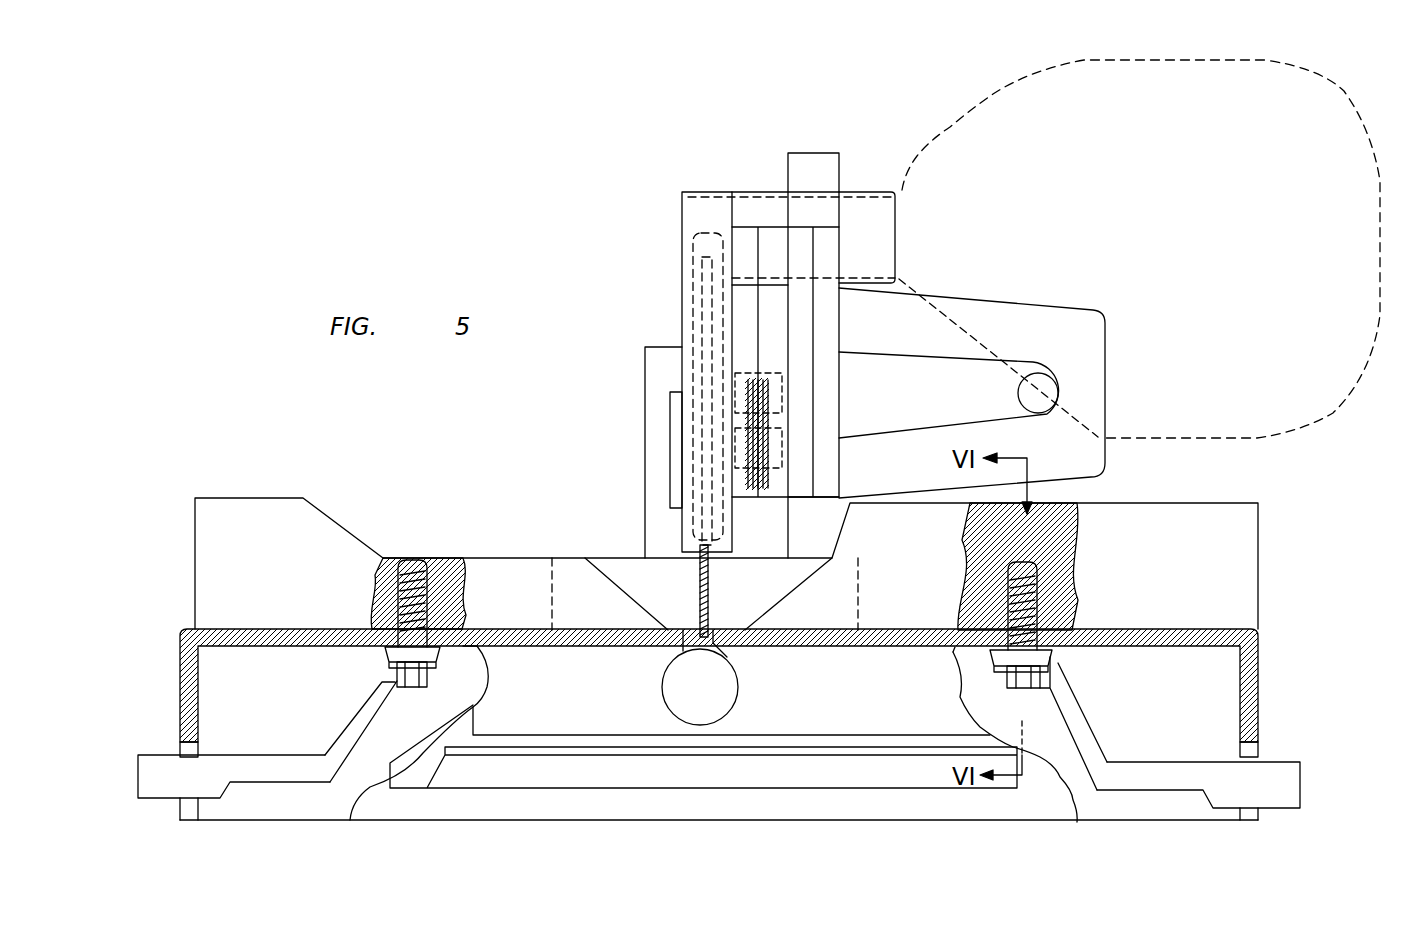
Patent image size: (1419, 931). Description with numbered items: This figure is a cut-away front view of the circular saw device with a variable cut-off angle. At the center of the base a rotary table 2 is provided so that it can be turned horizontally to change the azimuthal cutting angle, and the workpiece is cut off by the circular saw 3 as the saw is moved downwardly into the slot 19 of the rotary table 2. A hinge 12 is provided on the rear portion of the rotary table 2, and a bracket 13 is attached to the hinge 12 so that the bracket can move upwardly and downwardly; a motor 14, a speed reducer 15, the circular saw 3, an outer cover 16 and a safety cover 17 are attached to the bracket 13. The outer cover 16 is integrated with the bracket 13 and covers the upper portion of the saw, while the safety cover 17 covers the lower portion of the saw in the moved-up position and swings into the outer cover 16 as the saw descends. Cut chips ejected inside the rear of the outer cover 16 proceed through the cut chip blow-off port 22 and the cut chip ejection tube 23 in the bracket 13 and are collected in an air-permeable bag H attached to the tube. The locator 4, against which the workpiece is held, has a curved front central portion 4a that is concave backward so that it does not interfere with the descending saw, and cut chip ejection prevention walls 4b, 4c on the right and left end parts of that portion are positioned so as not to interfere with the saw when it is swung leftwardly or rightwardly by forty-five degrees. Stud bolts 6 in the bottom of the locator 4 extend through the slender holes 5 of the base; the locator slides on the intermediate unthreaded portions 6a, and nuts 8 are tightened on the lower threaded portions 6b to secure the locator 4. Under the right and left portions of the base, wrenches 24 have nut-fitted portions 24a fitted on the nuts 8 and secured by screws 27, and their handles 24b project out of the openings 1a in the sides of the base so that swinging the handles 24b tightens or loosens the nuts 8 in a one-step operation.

The cut-out portion 1a is at (182, 747).
The rotary table 2 is at (795, 737).
The circular saw 3 is at (710, 608).
The locator 4 is at (323, 530).
The curved front central portion 4a is at (612, 572).
The cut chip ejection prevention wall 4b is at (618, 603).
The cut chip ejection prevention wall 4c is at (803, 592).
The slender hole 5 is at (1060, 649).
The stud bolt 6 is at (426, 560).
The intermediate unthreaded portion 6a is at (410, 565).
The lower threaded portion 6b is at (402, 690).
The nut 8 is at (470, 660).
The hinge 12 is at (645, 357).
The bracket 13 is at (826, 153).
The motor 14 is at (950, 310).
The speed reducer 15 is at (758, 355).
The outer cover 16 is at (682, 212).
The safety cover 17 is at (693, 240).
The slot 19 is at (688, 648).
The cut chip blow-off port 22 is at (744, 192).
The cut chip ejection tube 23 is at (870, 192).
The wrench 24 is at (258, 770).
The nut-fitted portion 24a is at (370, 690).
The handle 24b is at (162, 795).
The screw 27 is at (378, 660).
The air-permeable bag H is at (946, 127).